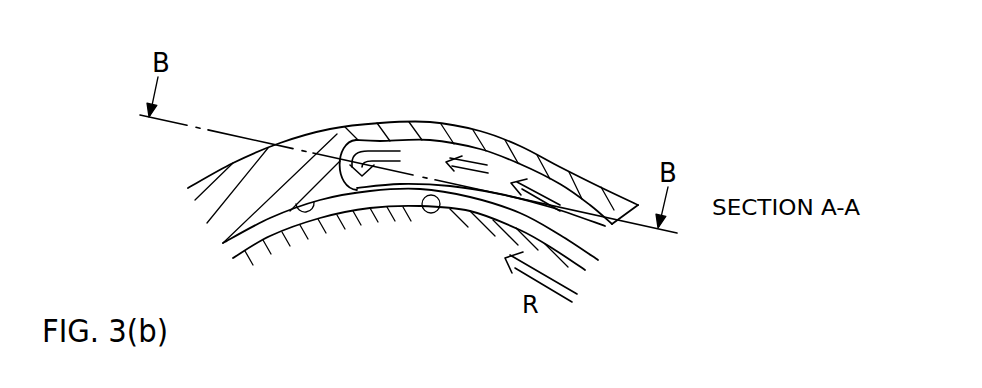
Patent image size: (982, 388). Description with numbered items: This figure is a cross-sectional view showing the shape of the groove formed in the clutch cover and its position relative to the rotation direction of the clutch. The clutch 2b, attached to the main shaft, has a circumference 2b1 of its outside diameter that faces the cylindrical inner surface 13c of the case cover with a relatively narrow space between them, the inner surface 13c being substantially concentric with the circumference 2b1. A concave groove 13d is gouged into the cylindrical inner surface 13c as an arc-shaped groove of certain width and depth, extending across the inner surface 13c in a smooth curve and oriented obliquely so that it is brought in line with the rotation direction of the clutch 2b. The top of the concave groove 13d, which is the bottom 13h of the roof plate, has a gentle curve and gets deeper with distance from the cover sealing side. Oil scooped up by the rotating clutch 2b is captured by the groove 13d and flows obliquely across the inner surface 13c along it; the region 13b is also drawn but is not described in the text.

The outer wall portion 13b is at (517, 153).
The cylindrical inner surface 13c is at (296, 204).
The concave groove 13d is at (344, 168).
The bottom of the roof plate 13h is at (368, 148).
The clutch 2b is at (403, 304).
The circumference of the outside diameter of the clutch 2b1 is at (437, 214).